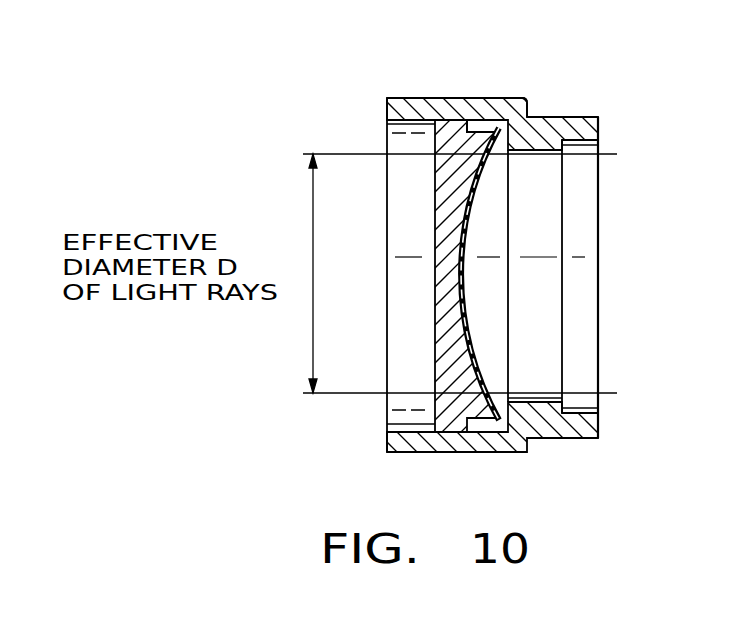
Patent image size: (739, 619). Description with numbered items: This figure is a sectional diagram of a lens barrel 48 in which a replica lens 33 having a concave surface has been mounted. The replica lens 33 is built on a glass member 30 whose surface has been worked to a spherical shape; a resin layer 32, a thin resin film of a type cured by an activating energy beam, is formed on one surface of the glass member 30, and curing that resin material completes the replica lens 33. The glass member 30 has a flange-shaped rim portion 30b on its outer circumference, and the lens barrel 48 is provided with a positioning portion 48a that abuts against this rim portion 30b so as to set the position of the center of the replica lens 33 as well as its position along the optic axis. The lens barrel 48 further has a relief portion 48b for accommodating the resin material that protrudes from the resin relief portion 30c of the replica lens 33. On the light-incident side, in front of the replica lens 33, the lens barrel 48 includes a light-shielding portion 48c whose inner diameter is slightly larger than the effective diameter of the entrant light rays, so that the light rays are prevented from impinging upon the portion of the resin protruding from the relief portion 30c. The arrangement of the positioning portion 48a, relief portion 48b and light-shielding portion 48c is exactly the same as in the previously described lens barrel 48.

The glass member 30 is at (447, 183).
The rim portion 30b is at (466, 118).
The resin relief portion 30c is at (525, 110).
The resin layer 32 is at (480, 352).
The replica lens 33 is at (482, 231).
The lens barrel 48 is at (513, 108).
The positioning portion 48a is at (455, 98).
The relief portion 48b is at (503, 456).
The light-shielding portion 48c is at (600, 398).